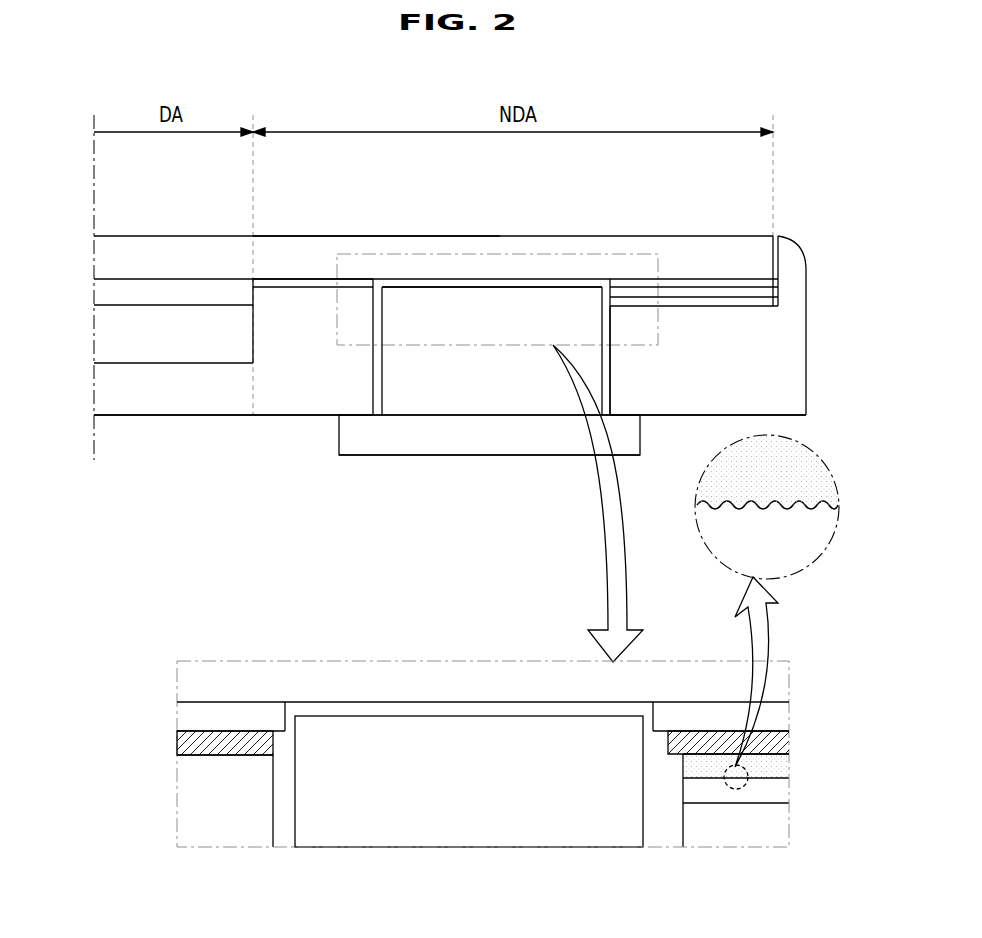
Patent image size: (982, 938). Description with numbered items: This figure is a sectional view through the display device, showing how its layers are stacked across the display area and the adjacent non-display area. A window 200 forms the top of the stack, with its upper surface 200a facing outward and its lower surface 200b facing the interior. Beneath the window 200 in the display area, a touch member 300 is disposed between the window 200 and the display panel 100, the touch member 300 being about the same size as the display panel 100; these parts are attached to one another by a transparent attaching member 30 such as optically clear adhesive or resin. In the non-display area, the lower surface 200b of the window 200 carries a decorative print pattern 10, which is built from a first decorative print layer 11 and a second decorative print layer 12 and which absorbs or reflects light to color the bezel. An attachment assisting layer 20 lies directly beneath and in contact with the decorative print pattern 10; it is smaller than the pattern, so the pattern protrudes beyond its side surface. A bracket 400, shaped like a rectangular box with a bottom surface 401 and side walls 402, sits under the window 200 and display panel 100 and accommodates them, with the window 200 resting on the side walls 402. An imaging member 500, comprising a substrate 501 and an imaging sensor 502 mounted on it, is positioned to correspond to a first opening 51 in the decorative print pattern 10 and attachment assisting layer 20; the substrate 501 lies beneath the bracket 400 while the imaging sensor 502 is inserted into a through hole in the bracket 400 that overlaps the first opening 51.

The decorative print pattern 10 is at (355, 282).
The first decorative print layer 11 is at (186, 713).
The second decorative print layer 12 is at (186, 738).
The attachment assisting layer 20 is at (778, 294).
The transparent attaching member 30 is at (778, 303).
The first opening 51 is at (480, 285).
The display panel 100 is at (100, 331).
The window 200 is at (720, 236).
The upper surface of the window 200a is at (288, 236).
The lower surface of the window 200b is at (303, 288).
The touch member 300 is at (100, 292).
The bracket 400 is at (275, 496).
The bottom surface 401 is at (178, 407).
The side walls 402 is at (272, 407).
The imaging member 500 is at (533, 534).
The substrate 501 is at (440, 442).
The imaging sensor 502 is at (520, 310).